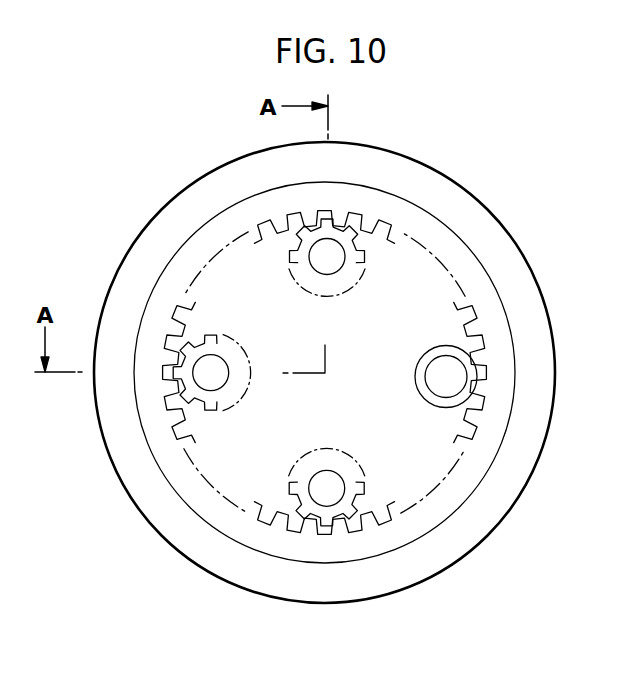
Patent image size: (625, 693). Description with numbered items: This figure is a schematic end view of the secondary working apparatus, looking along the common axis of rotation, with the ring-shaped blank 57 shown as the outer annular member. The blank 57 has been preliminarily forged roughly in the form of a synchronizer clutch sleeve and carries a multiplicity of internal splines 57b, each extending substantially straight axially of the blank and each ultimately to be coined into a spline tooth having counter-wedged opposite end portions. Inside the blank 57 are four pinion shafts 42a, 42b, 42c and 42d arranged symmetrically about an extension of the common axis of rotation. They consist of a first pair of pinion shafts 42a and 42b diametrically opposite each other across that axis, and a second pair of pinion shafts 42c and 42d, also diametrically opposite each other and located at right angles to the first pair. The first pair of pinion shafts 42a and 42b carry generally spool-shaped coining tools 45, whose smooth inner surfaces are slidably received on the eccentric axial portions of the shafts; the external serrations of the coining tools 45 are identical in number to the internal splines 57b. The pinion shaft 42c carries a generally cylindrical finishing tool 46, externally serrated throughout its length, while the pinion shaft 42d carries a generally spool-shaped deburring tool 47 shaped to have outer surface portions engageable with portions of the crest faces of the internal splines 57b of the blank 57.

The ring-shaped blank 57 is at (510, 227).
The internal splines 57b is at (388, 238).
The pinion shaft 42a is at (316, 271).
The pinion shaft 42b is at (342, 445).
The pinion shaft 42c is at (222, 352).
The pinion shaft 42d is at (433, 353).
The coining tool 45 is at (353, 289).
The finishing tool 46 is at (232, 403).
The deburring tool 47 is at (422, 406).